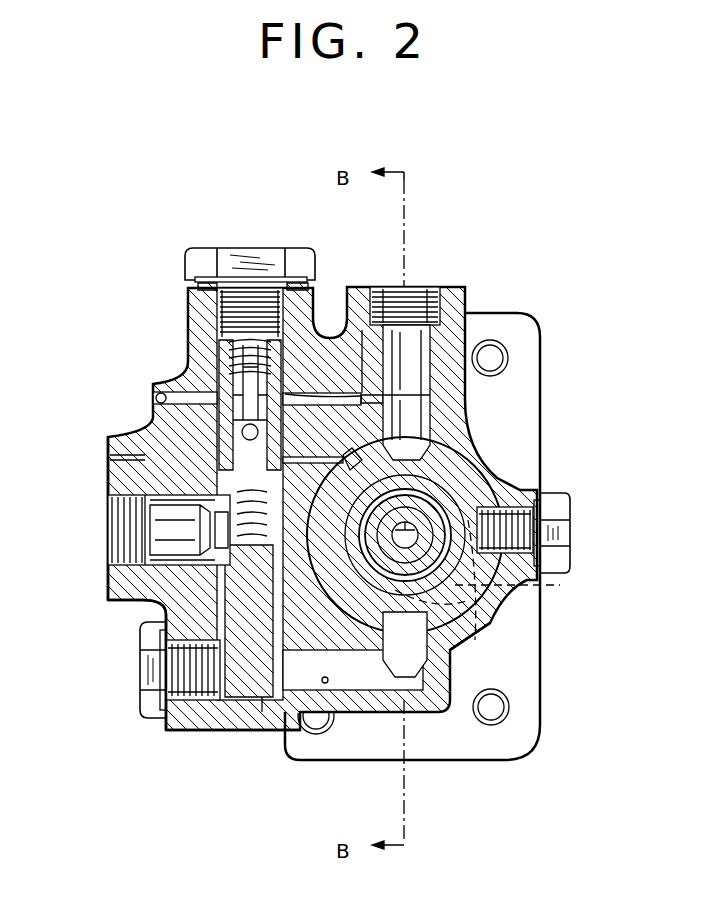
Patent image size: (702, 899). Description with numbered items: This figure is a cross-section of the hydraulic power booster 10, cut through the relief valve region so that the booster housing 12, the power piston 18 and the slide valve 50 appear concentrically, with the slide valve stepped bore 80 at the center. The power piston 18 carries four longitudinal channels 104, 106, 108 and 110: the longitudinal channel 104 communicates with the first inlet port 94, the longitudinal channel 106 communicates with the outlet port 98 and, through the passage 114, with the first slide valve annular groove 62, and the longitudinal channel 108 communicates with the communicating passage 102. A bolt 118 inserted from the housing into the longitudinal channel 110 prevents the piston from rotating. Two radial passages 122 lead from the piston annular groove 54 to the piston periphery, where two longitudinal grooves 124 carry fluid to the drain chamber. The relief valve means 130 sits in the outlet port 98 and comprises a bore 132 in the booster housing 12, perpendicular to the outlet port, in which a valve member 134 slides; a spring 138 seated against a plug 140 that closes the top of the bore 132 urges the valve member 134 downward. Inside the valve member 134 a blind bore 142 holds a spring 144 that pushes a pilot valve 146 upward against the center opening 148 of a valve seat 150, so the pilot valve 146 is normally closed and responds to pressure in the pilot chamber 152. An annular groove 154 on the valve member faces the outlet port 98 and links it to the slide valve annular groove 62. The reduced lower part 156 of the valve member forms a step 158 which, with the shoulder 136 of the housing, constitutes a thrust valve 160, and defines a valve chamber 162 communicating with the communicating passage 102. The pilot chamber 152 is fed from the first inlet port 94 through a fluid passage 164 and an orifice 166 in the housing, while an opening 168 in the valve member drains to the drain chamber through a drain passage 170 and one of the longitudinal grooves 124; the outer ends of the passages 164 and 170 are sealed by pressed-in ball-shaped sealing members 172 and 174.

The hydraulic power booster 10 is at (528, 752).
The booster housing 12 is at (440, 735).
The power piston 18 is at (478, 460).
The slide valve 50 is at (450, 520).
The piston annular groove 54 is at (500, 625).
The slide valve annular groove 62 is at (500, 500).
The slide valve stepped bore 80 is at (425, 510).
The first inlet port 94 is at (405, 300).
The outlet port 98 is at (118, 560).
The communicating passage 102 is at (325, 680).
The longitudinal channel 104 is at (432, 425).
The longitudinal channel 106 is at (353, 670).
The longitudinal channel 108 is at (455, 648).
The longitudinal channel 110 is at (548, 508).
The passage 114 is at (400, 660).
The bolt 118 is at (546, 545).
The radial passages 122 is at (538, 585).
The longitudinal grooves 124 is at (345, 432).
The relief valve means 130 is at (175, 404).
The bore 132 is at (150, 660).
The valve member 134 is at (262, 700).
The shoulder 136 is at (160, 600).
The spring 138 is at (195, 330).
The plug 140 is at (200, 250).
The blind bore 142 is at (180, 385).
The spring 144 is at (120, 500).
The pilot valve 146 is at (233, 395).
The center opening 148 is at (252, 345).
The valve seat 150 is at (222, 368).
The pilot chamber 152 is at (268, 335).
The annular groove 154 is at (160, 525).
The lower part 156 is at (175, 735).
The step 158 is at (232, 585).
The thrust valve 160 is at (162, 638).
The valve chamber 162 is at (225, 735).
The fluid passage 164 is at (324, 318).
The orifice 166 is at (363, 393).
The opening 168 is at (108, 437).
The drain passage 170 is at (300, 415).
The ball-shaped sealing member 172 is at (160, 394).
The ball-shaped sealing member 174 is at (145, 457).